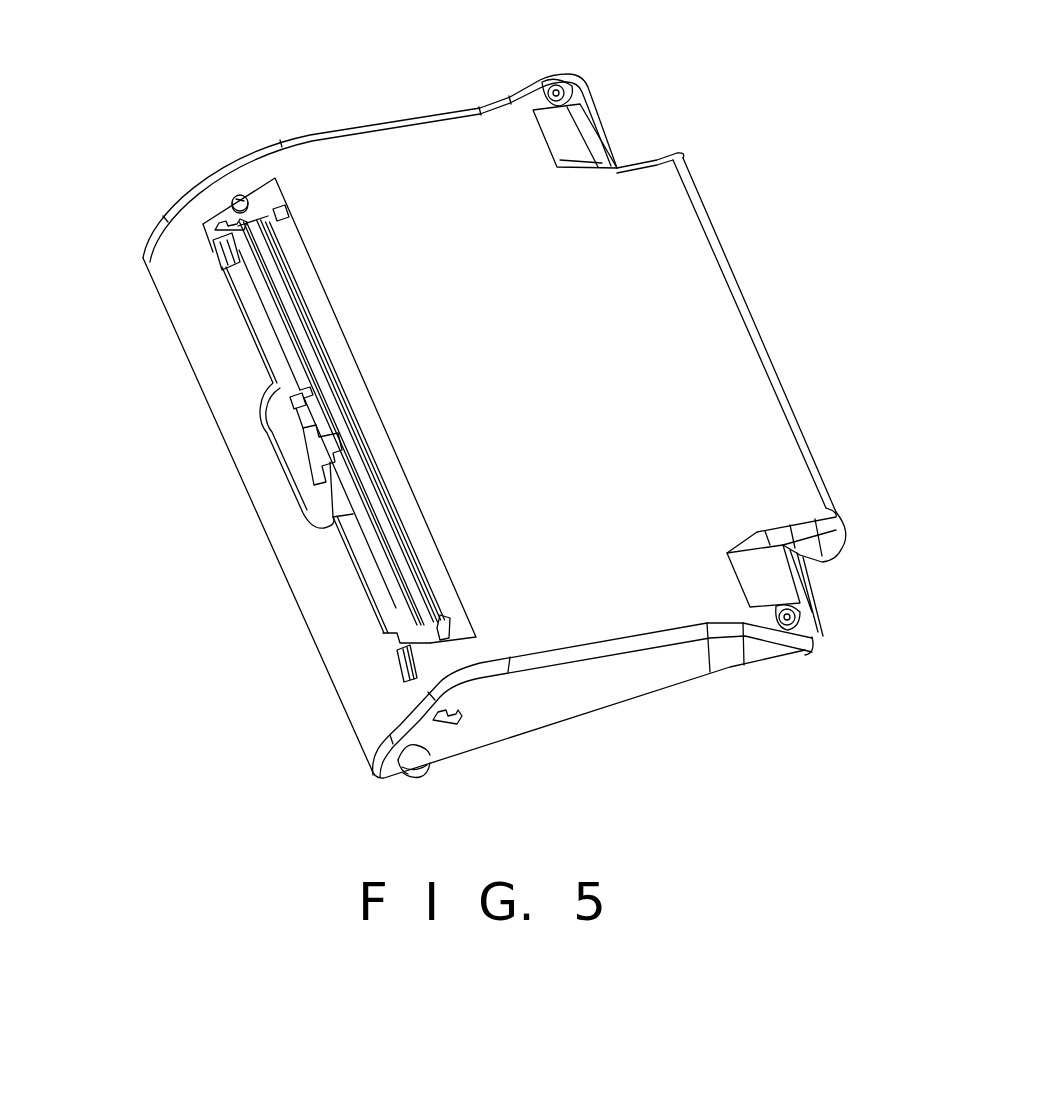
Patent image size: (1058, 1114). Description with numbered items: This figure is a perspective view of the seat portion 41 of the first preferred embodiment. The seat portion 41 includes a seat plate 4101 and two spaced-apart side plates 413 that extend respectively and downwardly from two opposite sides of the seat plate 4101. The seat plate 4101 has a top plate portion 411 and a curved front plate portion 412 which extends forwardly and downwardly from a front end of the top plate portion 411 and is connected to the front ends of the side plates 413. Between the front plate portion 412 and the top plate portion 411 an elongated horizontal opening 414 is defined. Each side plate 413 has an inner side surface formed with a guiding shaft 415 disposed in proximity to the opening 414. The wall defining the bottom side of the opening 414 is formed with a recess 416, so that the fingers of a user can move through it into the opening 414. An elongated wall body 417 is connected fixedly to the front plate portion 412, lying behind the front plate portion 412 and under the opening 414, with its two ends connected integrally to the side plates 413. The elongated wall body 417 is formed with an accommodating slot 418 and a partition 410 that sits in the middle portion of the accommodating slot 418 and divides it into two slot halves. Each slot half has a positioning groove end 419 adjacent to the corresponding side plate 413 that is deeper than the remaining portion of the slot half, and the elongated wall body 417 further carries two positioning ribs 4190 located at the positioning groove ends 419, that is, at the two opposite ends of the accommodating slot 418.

The seat portion 41 is at (776, 333).
The partition 410 is at (327, 437).
The seat plate 4101 is at (623, 280).
The top plate portion 411 is at (430, 137).
The front plate portion 412 is at (307, 597).
The side plate 413 is at (265, 148).
The opening 414 is at (380, 450).
The guiding shaft 415 is at (237, 196).
The recess 416 is at (303, 483).
The elongated wall body 417 is at (282, 318).
The accommodating slot 418 is at (302, 387).
The positioning groove end 419 is at (258, 217).
The positioning rib 4190 is at (225, 258).